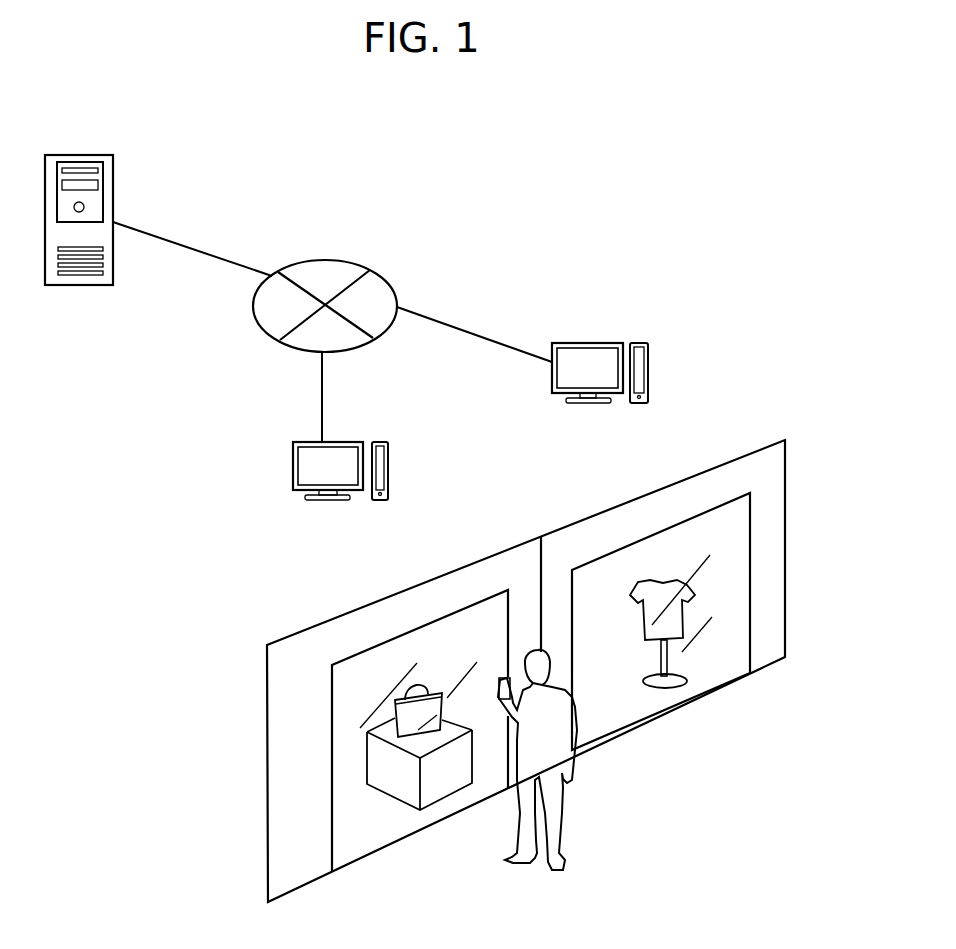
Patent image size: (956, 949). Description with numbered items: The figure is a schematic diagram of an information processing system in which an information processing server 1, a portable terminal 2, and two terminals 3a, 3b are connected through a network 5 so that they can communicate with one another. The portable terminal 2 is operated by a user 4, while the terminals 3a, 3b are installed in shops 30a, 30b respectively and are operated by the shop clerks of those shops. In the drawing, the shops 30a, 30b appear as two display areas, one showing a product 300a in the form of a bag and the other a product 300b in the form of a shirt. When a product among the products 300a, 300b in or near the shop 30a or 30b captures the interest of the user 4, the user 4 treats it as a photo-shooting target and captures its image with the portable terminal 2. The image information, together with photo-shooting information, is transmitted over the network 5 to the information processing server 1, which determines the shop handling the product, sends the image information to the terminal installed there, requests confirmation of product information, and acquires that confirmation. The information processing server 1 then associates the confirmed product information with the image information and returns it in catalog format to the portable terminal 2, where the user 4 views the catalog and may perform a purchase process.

The information processing server 1 is at (78, 287).
The network 5 is at (338, 260).
The terminal 3a is at (348, 441).
The terminal 3b is at (589, 343).
The portable terminal 2 is at (503, 678).
The shop 30a is at (316, 882).
The shop 30b is at (770, 664).
The product 300a is at (402, 692).
The product 300b is at (669, 578).
The user 4 is at (561, 804).